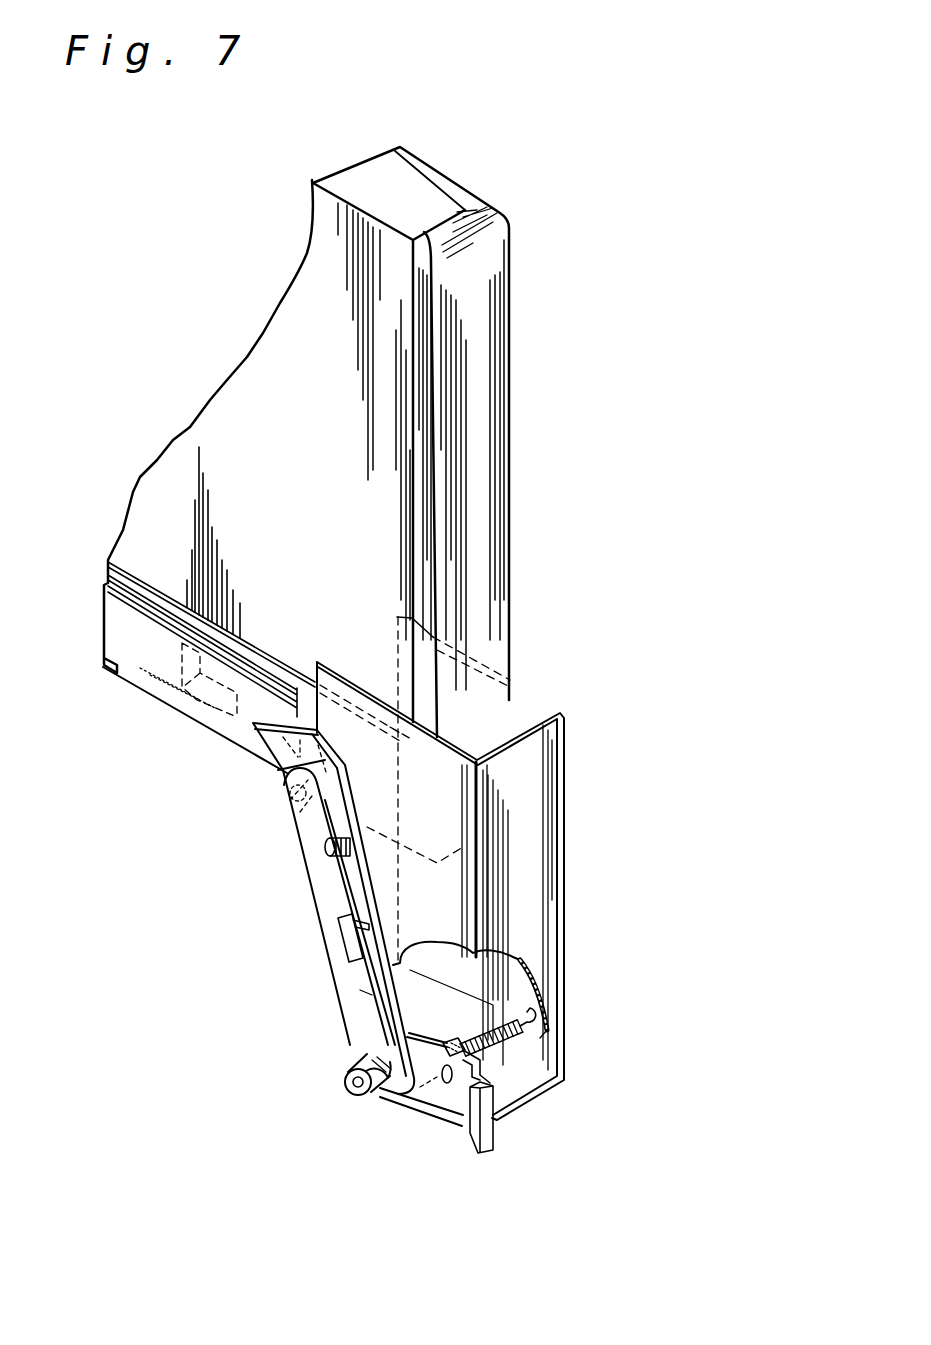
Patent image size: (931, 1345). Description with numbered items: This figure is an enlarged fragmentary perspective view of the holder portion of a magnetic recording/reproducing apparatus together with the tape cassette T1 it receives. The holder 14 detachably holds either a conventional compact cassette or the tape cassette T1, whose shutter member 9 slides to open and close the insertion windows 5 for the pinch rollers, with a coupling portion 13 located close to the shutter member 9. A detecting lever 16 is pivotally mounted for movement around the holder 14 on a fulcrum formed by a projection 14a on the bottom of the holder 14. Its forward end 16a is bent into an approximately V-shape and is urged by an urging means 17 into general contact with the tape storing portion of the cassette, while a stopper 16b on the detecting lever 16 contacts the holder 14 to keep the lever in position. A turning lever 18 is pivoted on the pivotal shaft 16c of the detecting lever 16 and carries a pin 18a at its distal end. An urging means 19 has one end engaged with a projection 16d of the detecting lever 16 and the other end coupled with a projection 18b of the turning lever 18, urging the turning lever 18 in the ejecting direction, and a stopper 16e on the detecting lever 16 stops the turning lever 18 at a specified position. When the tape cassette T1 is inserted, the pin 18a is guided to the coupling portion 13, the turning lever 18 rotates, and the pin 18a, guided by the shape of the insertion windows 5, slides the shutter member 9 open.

The shutter member 9 is at (143, 660).
The insertion windows 5 is at (253, 720).
The tape cassette T1 is at (477, 500).
The holder 14 is at (530, 852).
The projection 14a is at (462, 1117).
The detecting lever 16 is at (370, 875).
The forward end 16a is at (267, 740).
The stopper 16b is at (490, 1087).
The pivotal shaft 16c is at (352, 1092).
The projection 16d is at (480, 1137).
The stopper 16e is at (333, 833).
The urging means 17 is at (503, 1040).
The turning lever 18 is at (318, 863).
The pin 18a is at (293, 797).
The projection 18b is at (345, 932).
The coupling portion 13 is at (303, 812).
The urging means 19 is at (362, 997).